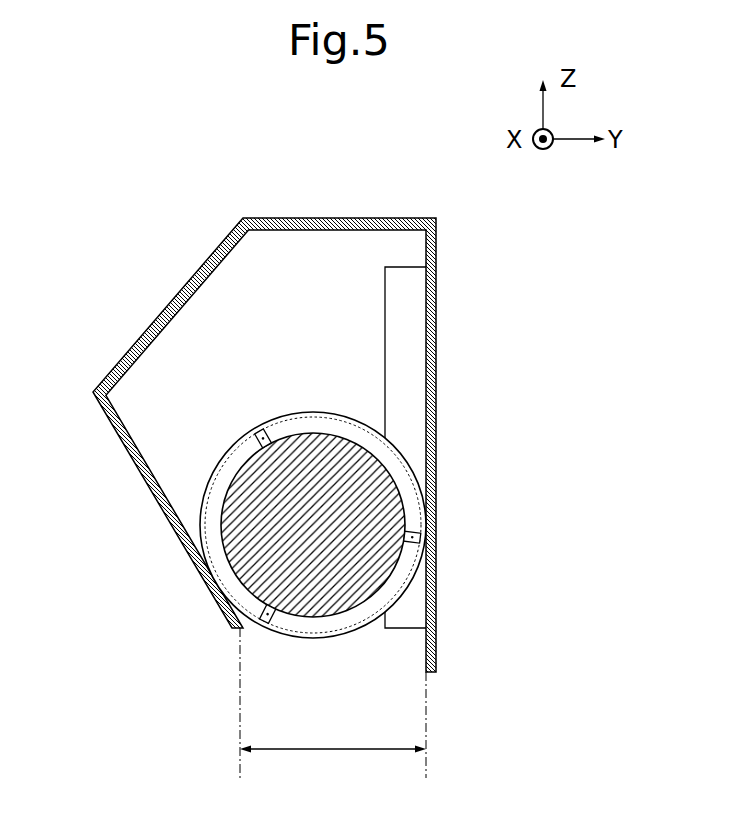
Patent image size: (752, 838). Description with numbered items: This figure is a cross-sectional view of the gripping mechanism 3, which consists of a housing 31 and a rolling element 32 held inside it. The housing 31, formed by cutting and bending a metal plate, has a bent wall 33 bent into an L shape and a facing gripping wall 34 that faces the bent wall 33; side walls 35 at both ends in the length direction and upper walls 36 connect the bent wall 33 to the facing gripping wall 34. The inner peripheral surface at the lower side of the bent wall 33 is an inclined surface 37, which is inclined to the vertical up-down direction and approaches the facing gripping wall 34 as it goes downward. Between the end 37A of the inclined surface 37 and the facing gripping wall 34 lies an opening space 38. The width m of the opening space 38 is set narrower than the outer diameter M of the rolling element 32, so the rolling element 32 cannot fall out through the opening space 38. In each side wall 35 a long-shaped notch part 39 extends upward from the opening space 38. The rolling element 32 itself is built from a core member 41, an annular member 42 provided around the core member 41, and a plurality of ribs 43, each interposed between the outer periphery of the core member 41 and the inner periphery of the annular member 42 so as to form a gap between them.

The gripping mechanism 3 is at (327, 211).
The housing 31 is at (263, 217).
The rolling element 32 is at (327, 637).
The bent wall 33 is at (135, 335).
The facing gripping wall 34 is at (437, 421).
The side wall 35 is at (365, 364).
The upper wall 36 is at (400, 217).
The inclined surface 37 is at (148, 463).
The end of the inclined surface 37A is at (238, 630).
The opening space 38 is at (302, 652).
The long-shaped notch part 39 is at (408, 316).
The core member 41 is at (299, 450).
The annular member 42 is at (304, 536).
The rib 43 is at (264, 434).
The outer diameter of the rolling element M is at (427, 579).
The width of the opening space m is at (333, 706).